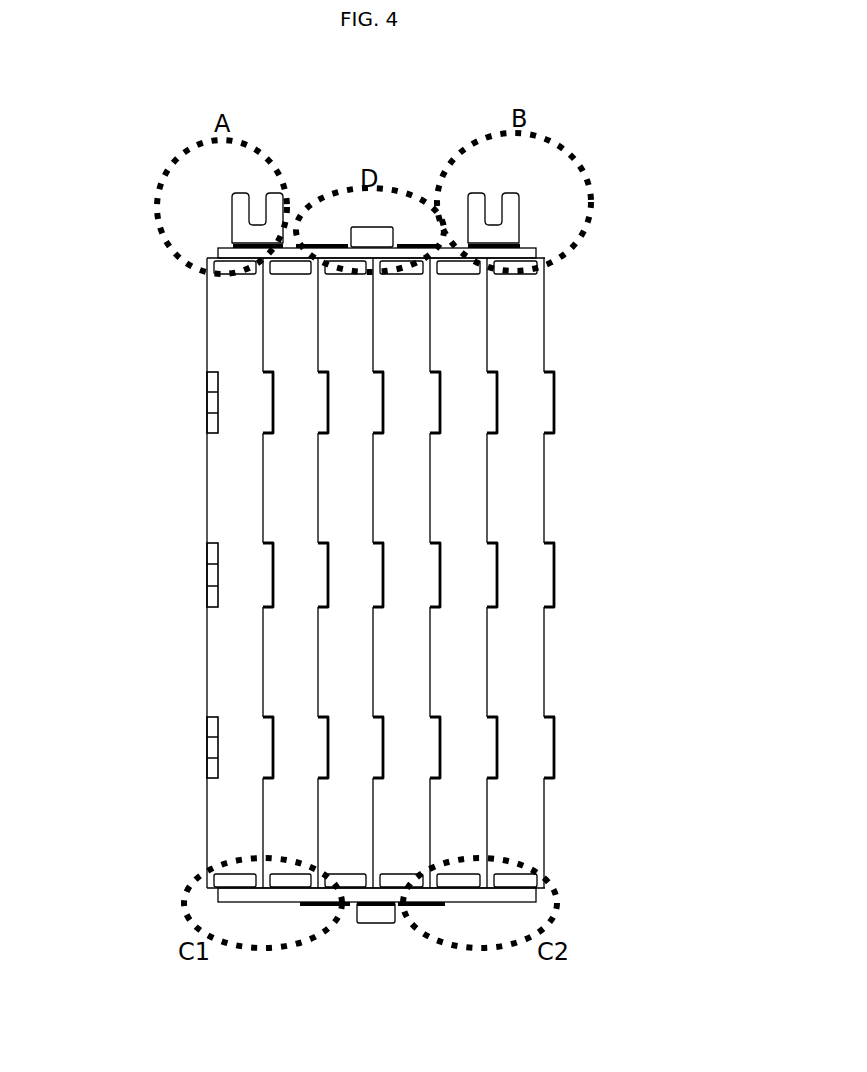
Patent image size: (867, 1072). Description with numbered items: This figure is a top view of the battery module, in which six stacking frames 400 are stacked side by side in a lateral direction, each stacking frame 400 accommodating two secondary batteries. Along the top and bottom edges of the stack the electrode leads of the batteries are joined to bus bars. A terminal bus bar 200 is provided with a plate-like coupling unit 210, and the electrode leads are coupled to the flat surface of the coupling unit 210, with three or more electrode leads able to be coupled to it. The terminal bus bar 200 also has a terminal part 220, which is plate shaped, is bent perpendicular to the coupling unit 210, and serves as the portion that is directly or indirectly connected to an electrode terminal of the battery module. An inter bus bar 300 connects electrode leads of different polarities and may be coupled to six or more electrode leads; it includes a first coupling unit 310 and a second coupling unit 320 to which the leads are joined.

The terminal bus bar 200 is at (371, 540).
The coupling unit 210 is at (236, 248).
The terminal part 220 is at (240, 206).
The inter bus bar 300 is at (377, 553).
The first coupling unit 310 is at (322, 244).
The second coupling unit 320 is at (427, 242).
The stacking frame 400 is at (467, 358).